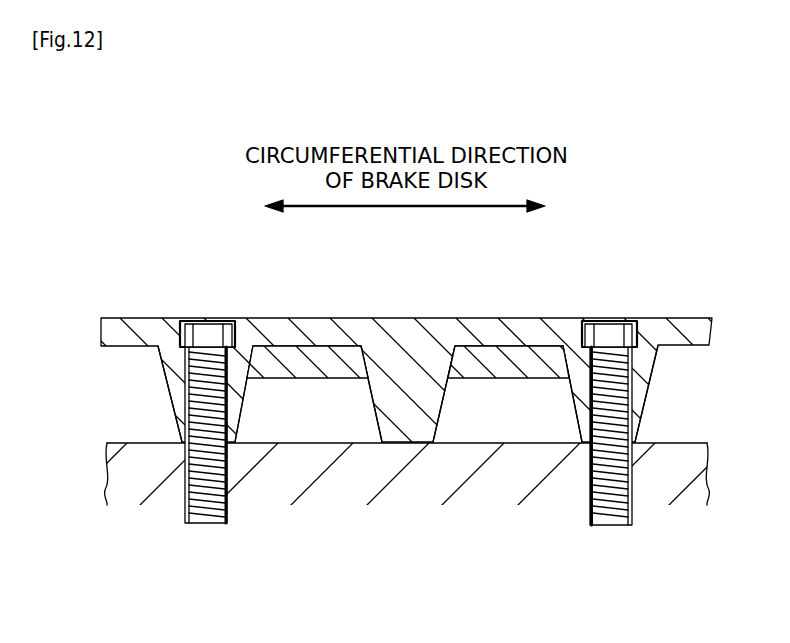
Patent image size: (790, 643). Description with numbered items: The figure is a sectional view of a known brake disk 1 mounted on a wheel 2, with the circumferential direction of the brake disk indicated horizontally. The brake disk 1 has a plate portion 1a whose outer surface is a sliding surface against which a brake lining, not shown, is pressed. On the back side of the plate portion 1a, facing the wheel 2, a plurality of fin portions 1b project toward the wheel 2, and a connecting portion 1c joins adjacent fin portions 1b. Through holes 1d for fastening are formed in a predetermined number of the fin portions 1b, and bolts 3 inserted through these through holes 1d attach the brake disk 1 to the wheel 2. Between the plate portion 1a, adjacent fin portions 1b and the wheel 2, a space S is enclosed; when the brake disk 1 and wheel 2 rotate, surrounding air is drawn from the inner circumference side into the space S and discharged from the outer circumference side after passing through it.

The brake disk 1 is at (115, 325).
The plate portion 1a is at (327, 328).
The fin portions 1b is at (175, 393).
The connecting portion 1c is at (295, 368).
The through holes 1d is at (216, 355).
The wheel 2 is at (107, 482).
The bolts 3 is at (203, 332).
The space S is at (345, 448).